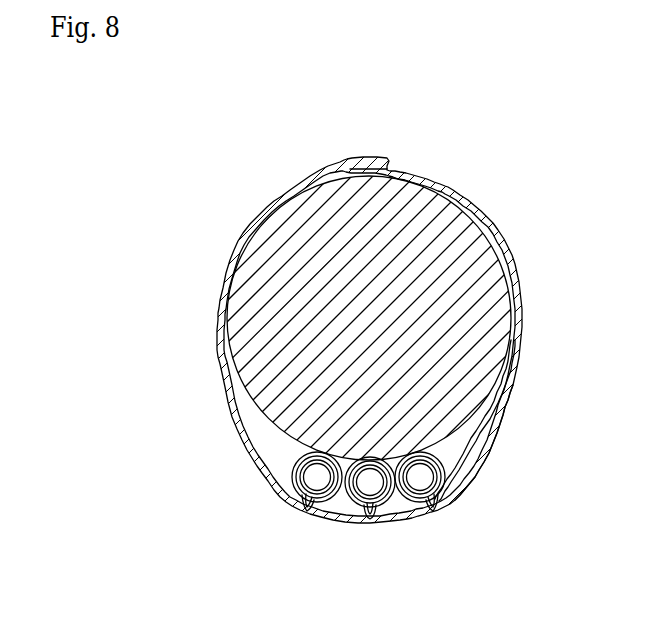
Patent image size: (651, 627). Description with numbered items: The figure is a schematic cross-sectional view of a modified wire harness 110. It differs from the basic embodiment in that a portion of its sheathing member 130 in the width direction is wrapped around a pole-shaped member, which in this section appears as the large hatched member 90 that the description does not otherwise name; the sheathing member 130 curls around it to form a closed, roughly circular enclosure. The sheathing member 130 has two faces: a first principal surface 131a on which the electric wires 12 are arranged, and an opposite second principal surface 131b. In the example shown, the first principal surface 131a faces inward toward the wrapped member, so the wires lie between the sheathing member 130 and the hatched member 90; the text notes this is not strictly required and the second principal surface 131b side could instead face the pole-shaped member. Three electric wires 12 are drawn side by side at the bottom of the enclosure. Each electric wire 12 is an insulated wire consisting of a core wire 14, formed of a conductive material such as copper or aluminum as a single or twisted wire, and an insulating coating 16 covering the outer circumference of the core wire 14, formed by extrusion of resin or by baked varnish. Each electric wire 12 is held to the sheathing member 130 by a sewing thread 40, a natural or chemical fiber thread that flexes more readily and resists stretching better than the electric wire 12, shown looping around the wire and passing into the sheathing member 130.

The wire harness 110 is at (224, 98).
The sheathing member 130 is at (433, 192).
The electric wire bundle 90 is at (472, 403).
The first principal surface 131a is at (480, 436).
The second principal surface 131b is at (486, 459).
The electric wire 12 is at (290, 556).
The core wire 14 is at (305, 490).
The insulating coating 16 is at (296, 493).
The sewing thread 40 is at (328, 512).